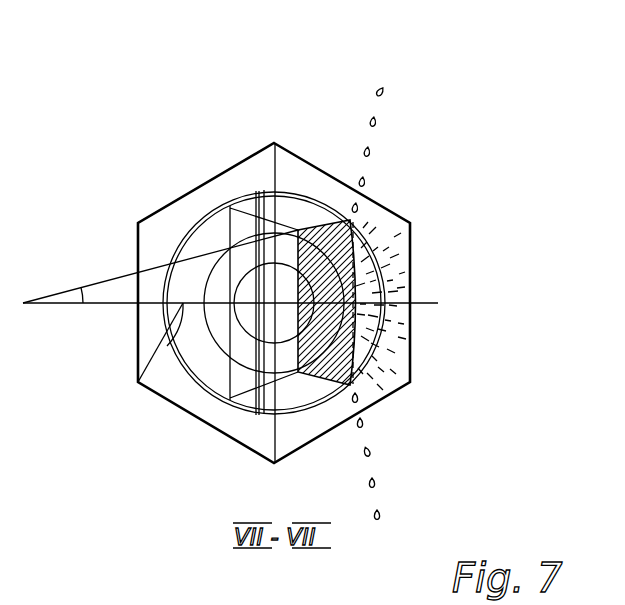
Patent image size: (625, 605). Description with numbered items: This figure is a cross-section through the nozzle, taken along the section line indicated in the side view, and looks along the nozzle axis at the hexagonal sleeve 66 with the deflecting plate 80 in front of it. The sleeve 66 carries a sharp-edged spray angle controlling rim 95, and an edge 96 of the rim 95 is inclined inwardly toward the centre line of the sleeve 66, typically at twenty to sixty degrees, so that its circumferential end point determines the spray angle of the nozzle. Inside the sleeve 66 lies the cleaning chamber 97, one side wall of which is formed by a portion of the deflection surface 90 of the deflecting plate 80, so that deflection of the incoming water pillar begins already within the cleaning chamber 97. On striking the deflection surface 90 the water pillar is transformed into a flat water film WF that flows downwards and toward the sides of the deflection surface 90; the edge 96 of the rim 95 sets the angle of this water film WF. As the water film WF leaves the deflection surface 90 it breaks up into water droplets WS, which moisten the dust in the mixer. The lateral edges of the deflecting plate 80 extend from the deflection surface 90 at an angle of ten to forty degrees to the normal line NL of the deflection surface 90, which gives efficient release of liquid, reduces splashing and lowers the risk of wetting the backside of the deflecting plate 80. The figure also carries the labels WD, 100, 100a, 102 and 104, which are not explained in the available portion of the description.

The sleeve 66 is at (390, 213).
The deflecting plate 80 is at (380, 378).
The deflection surface 90 is at (357, 287).
The spray angle controlling rim 95 is at (216, 197).
The edge of the rim 96 is at (255, 172).
The cleaning chamber 97 is at (370, 330).
The seal ring 100 is at (312, 205).
The seal plate 100a is at (280, 190).
The inner ring 102 is at (238, 385).
The outer ring 104 is at (307, 192).
The water droplets WS is at (384, 93).
The water film WF is at (358, 253).
The water dispersion WD is at (358, 266).
The normal line NL is at (137, 383).